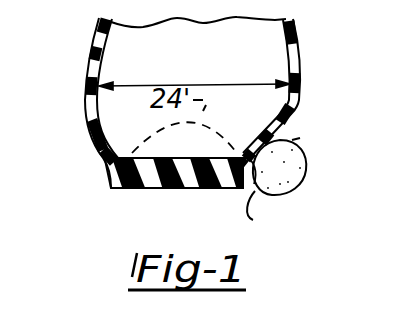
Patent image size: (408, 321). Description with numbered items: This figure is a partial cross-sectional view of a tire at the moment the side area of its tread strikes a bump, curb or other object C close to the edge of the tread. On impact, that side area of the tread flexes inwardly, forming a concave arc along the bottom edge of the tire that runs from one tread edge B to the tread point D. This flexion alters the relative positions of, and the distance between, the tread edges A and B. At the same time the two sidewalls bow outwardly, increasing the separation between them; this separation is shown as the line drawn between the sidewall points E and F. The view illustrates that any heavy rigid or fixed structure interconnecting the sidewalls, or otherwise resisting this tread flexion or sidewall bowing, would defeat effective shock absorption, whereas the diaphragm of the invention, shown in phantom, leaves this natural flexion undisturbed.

The tread edge A is at (110, 188).
The tread edge B is at (297, 140).
The bump, curb or object C is at (290, 192).
The tread point D is at (253, 220).
The sidewall point E is at (88, 86).
The sidewall point F is at (299, 80).